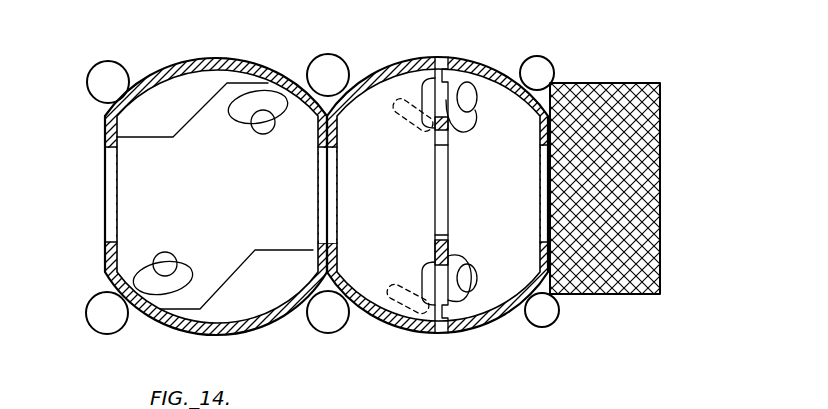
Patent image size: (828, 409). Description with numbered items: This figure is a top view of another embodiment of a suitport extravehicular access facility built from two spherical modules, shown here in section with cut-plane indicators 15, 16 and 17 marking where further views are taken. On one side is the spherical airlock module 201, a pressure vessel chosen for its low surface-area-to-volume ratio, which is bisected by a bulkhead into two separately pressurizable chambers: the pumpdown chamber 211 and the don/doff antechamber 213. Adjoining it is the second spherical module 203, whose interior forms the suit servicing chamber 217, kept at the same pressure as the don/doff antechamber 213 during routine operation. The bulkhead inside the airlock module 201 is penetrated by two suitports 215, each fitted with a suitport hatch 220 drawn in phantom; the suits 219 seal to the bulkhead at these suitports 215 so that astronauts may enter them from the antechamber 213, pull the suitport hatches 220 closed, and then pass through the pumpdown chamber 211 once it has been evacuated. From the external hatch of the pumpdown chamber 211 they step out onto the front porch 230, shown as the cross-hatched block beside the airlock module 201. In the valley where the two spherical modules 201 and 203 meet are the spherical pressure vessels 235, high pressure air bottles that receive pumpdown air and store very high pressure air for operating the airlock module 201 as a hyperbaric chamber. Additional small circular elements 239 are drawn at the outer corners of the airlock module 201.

The spherical airlock module 201 is at (410, 336).
The second spherical module 203 is at (189, 332).
The pumpdown chamber 211 is at (482, 204).
The don/doff antechamber 213 is at (370, 204).
The suitport 215 is at (455, 108).
The servicing chamber 217 is at (203, 205).
The suit 219 is at (137, 272).
The suitport hatch 220 is at (413, 120).
The front porch 230 is at (657, 233).
The spherical pressure vessel 235 is at (333, 67).
The end roller 239 is at (542, 68).
The section line 15- 15 is at (215, 77).
The section line 16- 16 is at (122, 192).
The section line 17- 17 is at (510, 98).